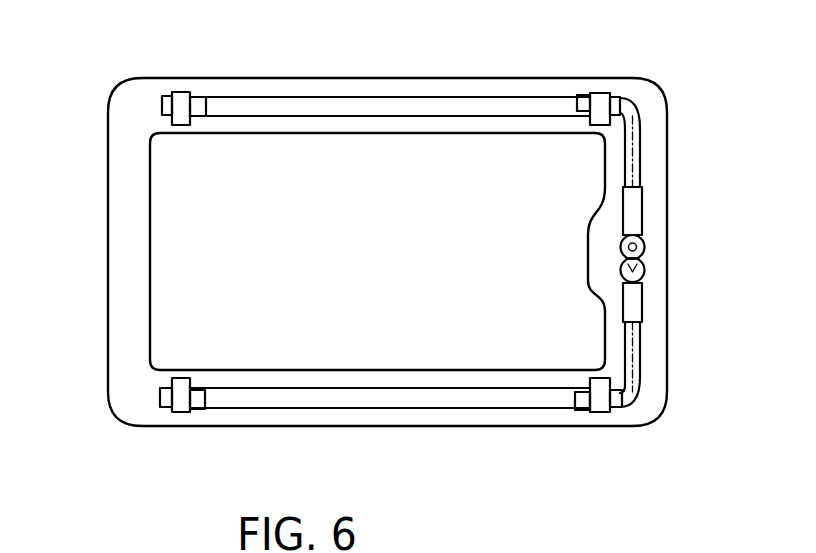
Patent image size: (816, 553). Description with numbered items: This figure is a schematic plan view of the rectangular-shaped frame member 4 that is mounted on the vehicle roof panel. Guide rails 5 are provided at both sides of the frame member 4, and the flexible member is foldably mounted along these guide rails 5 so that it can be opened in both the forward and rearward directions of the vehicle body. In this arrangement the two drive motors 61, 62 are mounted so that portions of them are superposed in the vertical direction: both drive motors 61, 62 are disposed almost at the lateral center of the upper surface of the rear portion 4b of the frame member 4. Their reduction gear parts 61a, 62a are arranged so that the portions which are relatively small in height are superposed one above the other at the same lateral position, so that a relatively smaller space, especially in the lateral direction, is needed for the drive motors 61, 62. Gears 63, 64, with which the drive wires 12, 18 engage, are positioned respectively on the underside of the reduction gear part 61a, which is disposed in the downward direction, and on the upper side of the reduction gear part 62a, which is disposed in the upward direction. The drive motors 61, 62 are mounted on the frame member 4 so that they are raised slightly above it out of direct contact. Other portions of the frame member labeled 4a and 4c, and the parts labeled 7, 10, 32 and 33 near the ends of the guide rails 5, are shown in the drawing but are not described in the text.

The frame member 4 is at (660, 86).
The left side wall of frame 4a is at (108, 276).
The rear portion of the frame member 4b is at (668, 318).
The upper and lower walls of frame 4c is at (426, 80).
The guide rail 5 is at (395, 118).
The pipe joint 7 is at (184, 93).
The nut 10 is at (200, 112).
The drive wire 12 is at (642, 343).
The drive wire 18 is at (595, 167).
The pipe joint 32 is at (600, 93).
The nut 33 is at (583, 93).
The drive motor 61 is at (643, 298).
The reduction gear part 61a is at (619, 269).
The drive motor 62 is at (643, 207).
The reduction gear part 62a is at (643, 240).
The gear 63 is at (643, 262).
The gear 64 is at (619, 244).